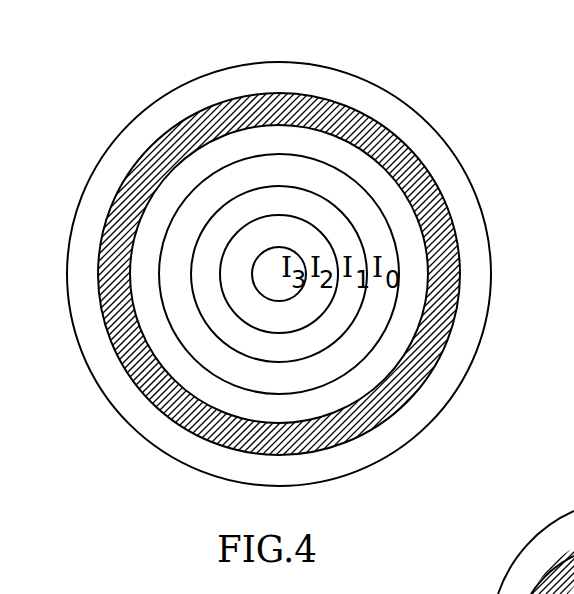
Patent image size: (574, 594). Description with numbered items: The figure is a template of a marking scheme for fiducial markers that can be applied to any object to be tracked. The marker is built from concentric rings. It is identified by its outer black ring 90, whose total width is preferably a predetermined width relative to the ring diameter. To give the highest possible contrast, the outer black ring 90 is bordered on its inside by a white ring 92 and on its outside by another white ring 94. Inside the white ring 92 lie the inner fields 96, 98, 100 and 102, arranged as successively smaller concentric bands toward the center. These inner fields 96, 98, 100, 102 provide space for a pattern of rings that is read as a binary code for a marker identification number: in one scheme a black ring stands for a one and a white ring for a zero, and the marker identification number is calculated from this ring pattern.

The outer black ring 90 is at (157, 140).
The white ring 92 is at (233, 150).
The white ring 94 is at (97, 207).
The inner field 96 is at (335, 185).
The inner field 98 is at (338, 232).
The inner field 100 is at (322, 307).
The inner field 102 is at (265, 278).